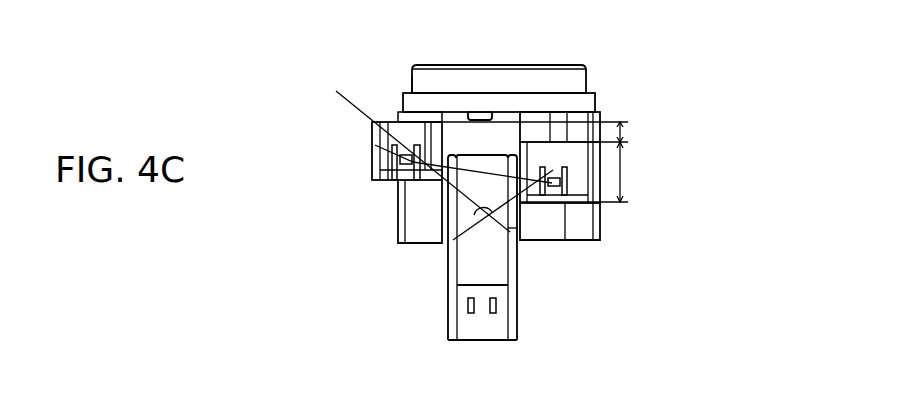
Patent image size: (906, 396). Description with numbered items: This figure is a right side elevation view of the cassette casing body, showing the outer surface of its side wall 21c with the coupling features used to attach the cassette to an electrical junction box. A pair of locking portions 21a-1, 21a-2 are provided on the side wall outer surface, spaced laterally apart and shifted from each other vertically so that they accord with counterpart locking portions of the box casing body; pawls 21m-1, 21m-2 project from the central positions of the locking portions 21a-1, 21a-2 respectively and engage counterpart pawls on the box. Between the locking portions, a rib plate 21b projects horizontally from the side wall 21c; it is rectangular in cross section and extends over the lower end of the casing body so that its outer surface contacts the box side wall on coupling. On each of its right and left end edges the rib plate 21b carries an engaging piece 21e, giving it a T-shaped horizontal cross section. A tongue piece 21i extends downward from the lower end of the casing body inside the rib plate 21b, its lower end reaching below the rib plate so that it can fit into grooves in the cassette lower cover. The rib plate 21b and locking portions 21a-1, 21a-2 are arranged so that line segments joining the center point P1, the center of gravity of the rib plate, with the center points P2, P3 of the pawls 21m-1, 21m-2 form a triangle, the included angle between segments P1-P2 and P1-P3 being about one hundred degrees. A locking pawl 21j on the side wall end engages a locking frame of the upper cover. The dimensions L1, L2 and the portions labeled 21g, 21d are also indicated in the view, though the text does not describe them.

The rib plate 21b is at (493, 155).
The housing upper portion 21g is at (455, 107).
The locking pawl 21j is at (478, 111).
The locking portion 21a-2 is at (372, 142).
The pawl 21m-2 is at (375, 147).
The locking portion 21a-1 is at (576, 204).
The pawl 21m-1 is at (556, 185).
The engaging piece 21e is at (400, 210).
The side wall 21c is at (557, 235).
The central column portion 21d is at (470, 258).
The tongue piece 21i is at (493, 331).
The center point P1 is at (453, 240).
The center point P2 is at (554, 172).
The center point P3 is at (411, 153).
The length L1 is at (545, 131).
The length L2 is at (586, 172).